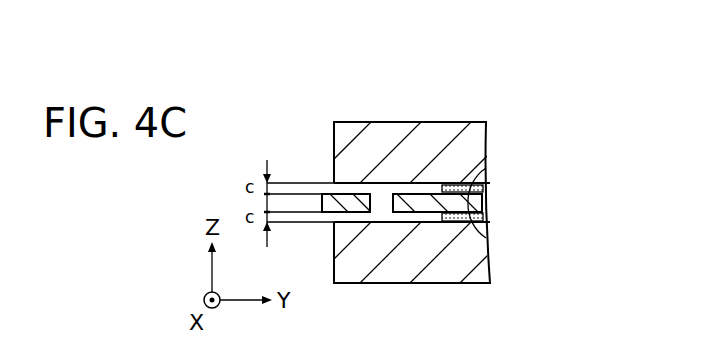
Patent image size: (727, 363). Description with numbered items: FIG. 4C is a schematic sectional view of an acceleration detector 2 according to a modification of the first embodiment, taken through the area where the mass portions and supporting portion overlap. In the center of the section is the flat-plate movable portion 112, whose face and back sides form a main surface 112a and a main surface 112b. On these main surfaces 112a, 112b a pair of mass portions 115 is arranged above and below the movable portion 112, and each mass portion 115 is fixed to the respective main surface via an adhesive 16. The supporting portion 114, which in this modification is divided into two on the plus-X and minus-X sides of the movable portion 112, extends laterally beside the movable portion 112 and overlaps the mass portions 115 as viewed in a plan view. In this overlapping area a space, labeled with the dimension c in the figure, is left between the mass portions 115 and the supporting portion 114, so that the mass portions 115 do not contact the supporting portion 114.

The acceleration detector 2 is at (463, 110).
The adhesive 16 is at (472, 189).
The movable portion 112 is at (483, 203).
The main surface 112a is at (486, 168).
The main surface 112b is at (486, 238).
The supporting portion 114 is at (321, 200).
The mass portion 115 is at (484, 135).